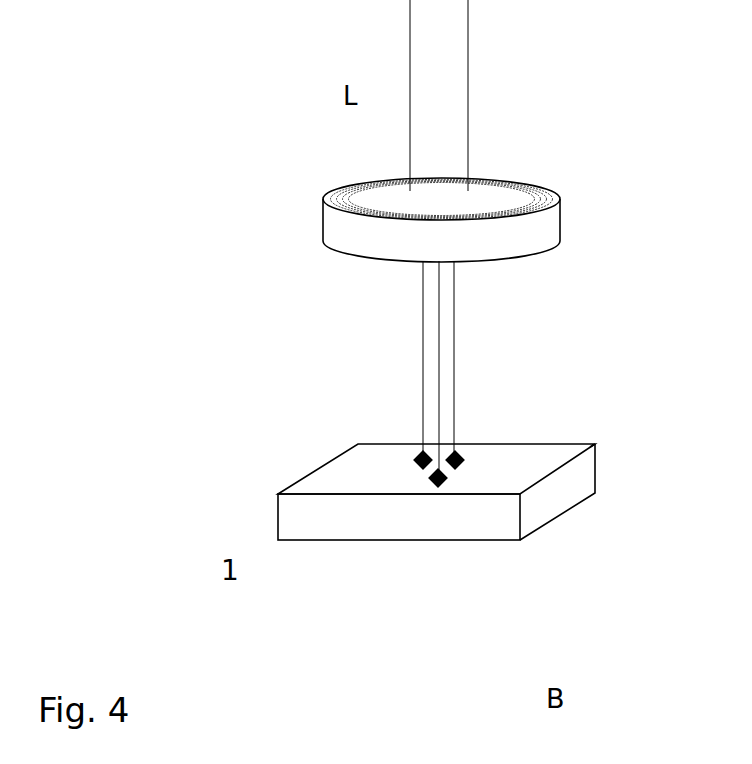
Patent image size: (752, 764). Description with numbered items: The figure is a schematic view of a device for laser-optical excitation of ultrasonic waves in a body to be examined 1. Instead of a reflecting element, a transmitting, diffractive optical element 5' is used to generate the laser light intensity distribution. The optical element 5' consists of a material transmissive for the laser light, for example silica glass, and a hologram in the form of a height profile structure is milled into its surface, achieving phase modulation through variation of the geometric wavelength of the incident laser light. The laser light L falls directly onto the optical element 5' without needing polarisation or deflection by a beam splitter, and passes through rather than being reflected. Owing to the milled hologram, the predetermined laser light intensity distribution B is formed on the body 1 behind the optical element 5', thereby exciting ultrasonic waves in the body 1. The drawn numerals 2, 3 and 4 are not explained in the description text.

The body to be examined 1 is at (427, 93).
The lens 2 is at (515, 235).
The substrate 3 is at (340, 463).
The focal spots 4 is at (447, 478).
The transmitting, diffractive optical element 5' is at (605, 451).